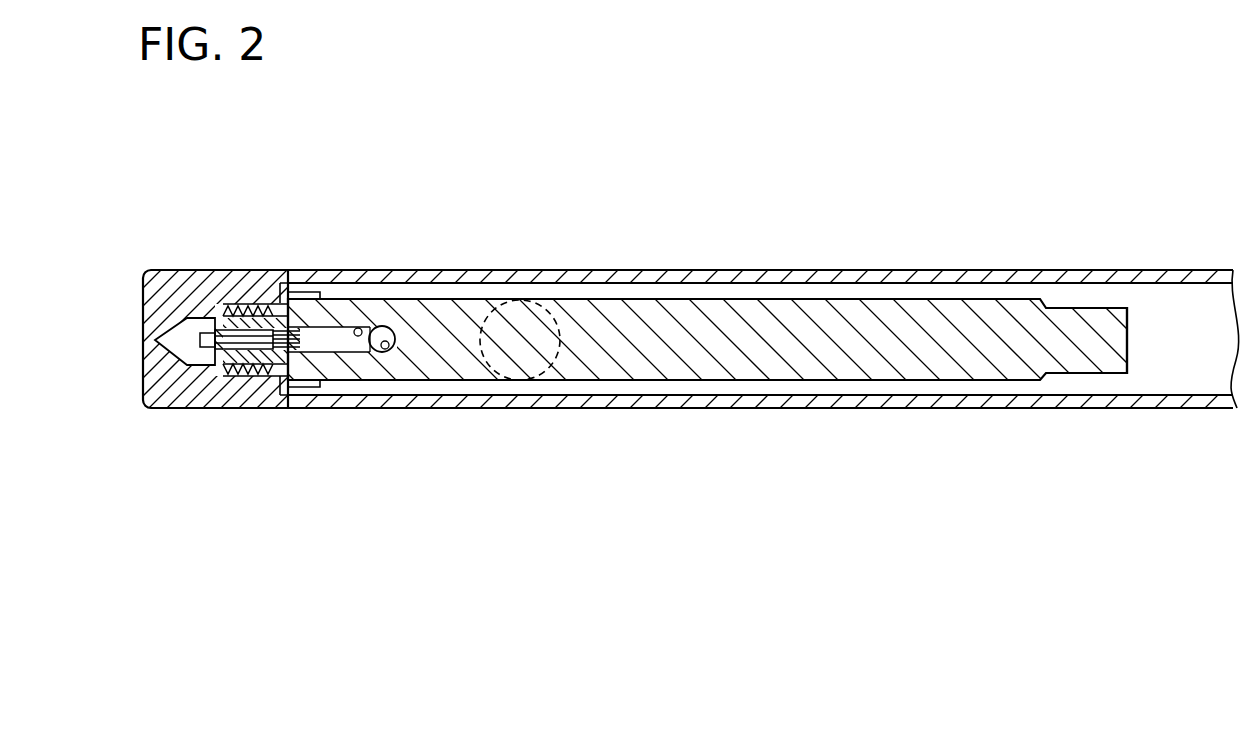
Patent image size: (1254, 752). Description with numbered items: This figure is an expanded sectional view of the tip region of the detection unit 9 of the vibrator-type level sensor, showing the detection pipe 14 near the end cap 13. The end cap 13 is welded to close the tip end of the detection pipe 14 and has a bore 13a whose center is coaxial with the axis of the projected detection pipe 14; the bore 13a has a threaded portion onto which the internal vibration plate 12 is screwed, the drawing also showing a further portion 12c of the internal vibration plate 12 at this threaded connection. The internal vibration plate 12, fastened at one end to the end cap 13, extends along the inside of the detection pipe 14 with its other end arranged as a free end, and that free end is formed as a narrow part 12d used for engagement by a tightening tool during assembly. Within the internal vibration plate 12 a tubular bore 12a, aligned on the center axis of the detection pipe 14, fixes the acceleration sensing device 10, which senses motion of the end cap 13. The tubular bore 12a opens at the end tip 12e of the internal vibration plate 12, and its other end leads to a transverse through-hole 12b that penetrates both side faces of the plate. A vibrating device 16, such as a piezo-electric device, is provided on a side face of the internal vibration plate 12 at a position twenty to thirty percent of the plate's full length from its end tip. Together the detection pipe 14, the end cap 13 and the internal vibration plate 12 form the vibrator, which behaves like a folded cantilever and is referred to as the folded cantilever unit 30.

The detection unit 9 is at (983, 270).
The acceleration sensing device 10 is at (222, 312).
The internal vibration plate 12 is at (748, 362).
The tubular bore 12a is at (360, 330).
The transverse through-hole 12b is at (386, 349).
The lower thread 12c is at (256, 370).
The narrow part 12d is at (1092, 333).
The end tip 12e is at (228, 308).
The end cap 13 is at (173, 408).
The bore 13a is at (207, 365).
The detection pipe 14 is at (860, 270).
The vibrating device 16 is at (533, 300).
The folded cantilever unit 30 is at (714, 264).